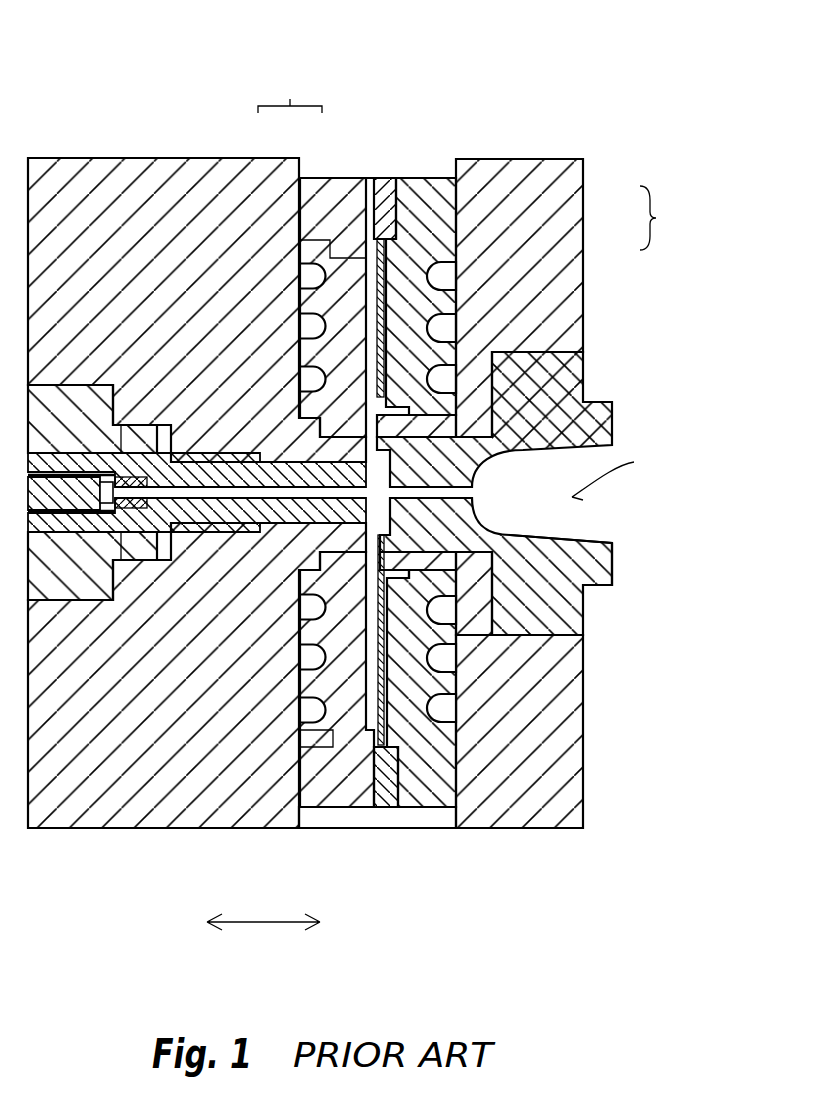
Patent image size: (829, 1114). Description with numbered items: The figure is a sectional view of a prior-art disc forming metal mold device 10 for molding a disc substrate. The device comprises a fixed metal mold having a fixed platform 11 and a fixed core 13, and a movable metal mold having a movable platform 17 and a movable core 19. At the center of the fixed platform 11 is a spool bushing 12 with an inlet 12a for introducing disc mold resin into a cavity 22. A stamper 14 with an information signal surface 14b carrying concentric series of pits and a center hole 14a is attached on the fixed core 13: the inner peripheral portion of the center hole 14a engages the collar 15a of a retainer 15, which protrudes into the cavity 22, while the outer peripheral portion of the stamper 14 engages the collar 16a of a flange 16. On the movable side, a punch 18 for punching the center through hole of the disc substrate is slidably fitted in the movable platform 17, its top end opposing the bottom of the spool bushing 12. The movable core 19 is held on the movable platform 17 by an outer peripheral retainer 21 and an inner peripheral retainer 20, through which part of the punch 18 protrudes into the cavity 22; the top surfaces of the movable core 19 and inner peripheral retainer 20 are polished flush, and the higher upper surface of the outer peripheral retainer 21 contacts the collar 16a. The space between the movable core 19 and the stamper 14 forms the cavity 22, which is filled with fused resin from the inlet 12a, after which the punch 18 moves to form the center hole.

The disc forming metal mold device 10 is at (56, 38).
The fixed platform 11 is at (540, 275).
The spool bushing 12 is at (622, 572).
The inlet 12a is at (582, 540).
The fixed core 13 is at (462, 212).
The stamper 14 is at (388, 663).
The center hole 14a is at (392, 578).
The information signal surface 14b is at (393, 725).
The retainer 15 is at (548, 354).
The collar 15a is at (441, 285).
The flange 16 is at (400, 814).
The collar 16a is at (383, 805).
The movable platform 17 is at (223, 175).
The punch 18 is at (228, 525).
The movable core 19 is at (340, 305).
The inner peripheral retainer 20 is at (330, 540).
The outer peripheral retainer 21 is at (323, 810).
The cavity 22 is at (378, 260).